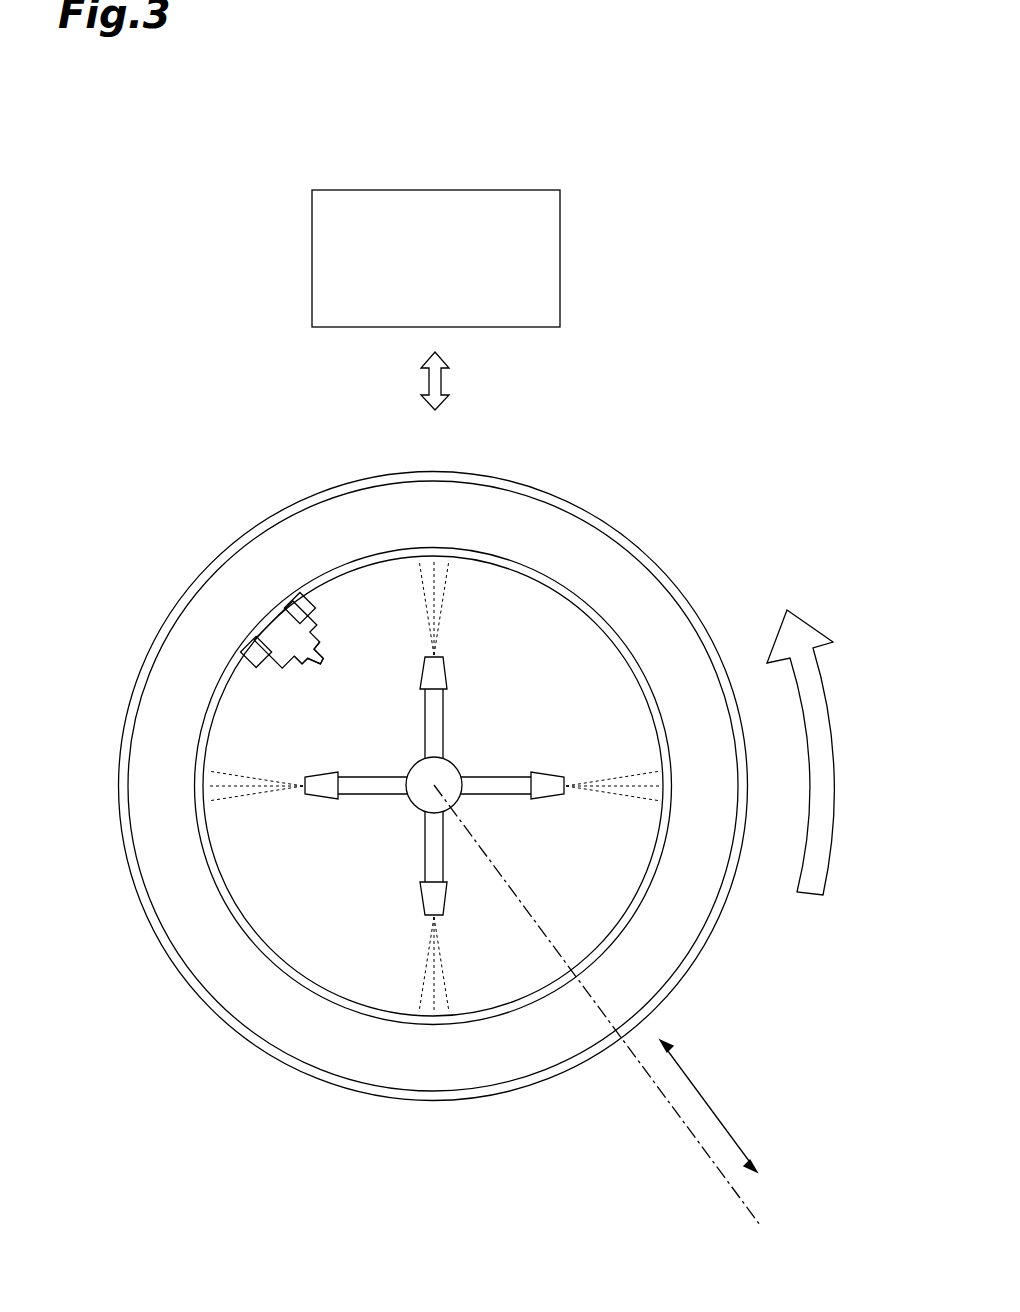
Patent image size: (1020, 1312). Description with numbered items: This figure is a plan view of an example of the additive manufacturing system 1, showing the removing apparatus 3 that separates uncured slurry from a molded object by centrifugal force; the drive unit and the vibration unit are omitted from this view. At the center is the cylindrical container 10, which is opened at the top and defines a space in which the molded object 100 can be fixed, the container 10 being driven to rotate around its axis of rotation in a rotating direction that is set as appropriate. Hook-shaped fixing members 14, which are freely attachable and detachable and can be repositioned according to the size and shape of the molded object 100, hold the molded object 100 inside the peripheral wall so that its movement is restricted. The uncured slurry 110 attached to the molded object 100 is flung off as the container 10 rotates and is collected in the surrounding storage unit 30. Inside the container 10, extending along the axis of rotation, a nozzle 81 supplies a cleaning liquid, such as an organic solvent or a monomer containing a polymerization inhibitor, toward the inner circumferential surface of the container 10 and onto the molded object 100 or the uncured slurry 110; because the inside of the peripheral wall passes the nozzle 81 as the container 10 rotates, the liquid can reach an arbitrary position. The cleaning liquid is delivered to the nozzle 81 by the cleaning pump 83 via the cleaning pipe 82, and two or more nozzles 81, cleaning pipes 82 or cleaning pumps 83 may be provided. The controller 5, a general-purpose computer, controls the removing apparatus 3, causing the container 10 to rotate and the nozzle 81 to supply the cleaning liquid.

The additive manufacturing system 1 is at (762, 221).
The removing apparatus 3 is at (703, 437).
The controller 5 is at (560, 228).
The container 10 is at (498, 555).
The fixing members 14 is at (278, 630).
The storage unit 30 is at (177, 613).
The nozzle 81 is at (423, 662).
The cleaning pipe 82 is at (425, 700).
The cleaning pump 83 is at (412, 768).
The molded object 100 is at (310, 623).
The uncured slurry 110 is at (312, 654).